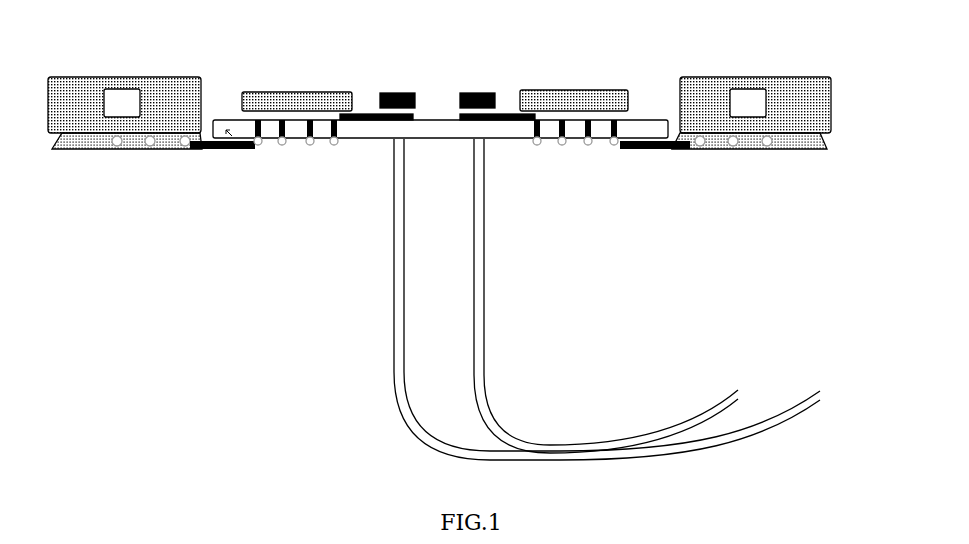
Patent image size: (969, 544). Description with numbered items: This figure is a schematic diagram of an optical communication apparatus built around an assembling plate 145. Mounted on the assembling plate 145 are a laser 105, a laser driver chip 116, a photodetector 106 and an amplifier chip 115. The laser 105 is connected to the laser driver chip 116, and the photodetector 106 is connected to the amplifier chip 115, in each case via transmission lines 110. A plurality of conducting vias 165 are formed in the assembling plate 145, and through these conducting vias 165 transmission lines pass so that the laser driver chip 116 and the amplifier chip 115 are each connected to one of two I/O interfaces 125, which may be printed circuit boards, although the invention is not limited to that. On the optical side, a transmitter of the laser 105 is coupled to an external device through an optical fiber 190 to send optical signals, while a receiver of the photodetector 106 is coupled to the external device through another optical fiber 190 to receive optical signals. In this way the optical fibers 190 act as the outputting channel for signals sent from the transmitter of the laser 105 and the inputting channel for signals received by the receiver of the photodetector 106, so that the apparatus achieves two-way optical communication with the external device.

The laser 105 is at (397, 93).
The photodetector 106 is at (478, 93).
The transmission lines 110 is at (508, 110).
The amplifier chip 115 is at (595, 140).
The laser driver chip 116 is at (281, 139).
The I/O interfaces 125 is at (439, 113).
The assembling plate 145 is at (226, 152).
The conducting vias 165 is at (548, 143).
The optical fibers 190 is at (408, 350).